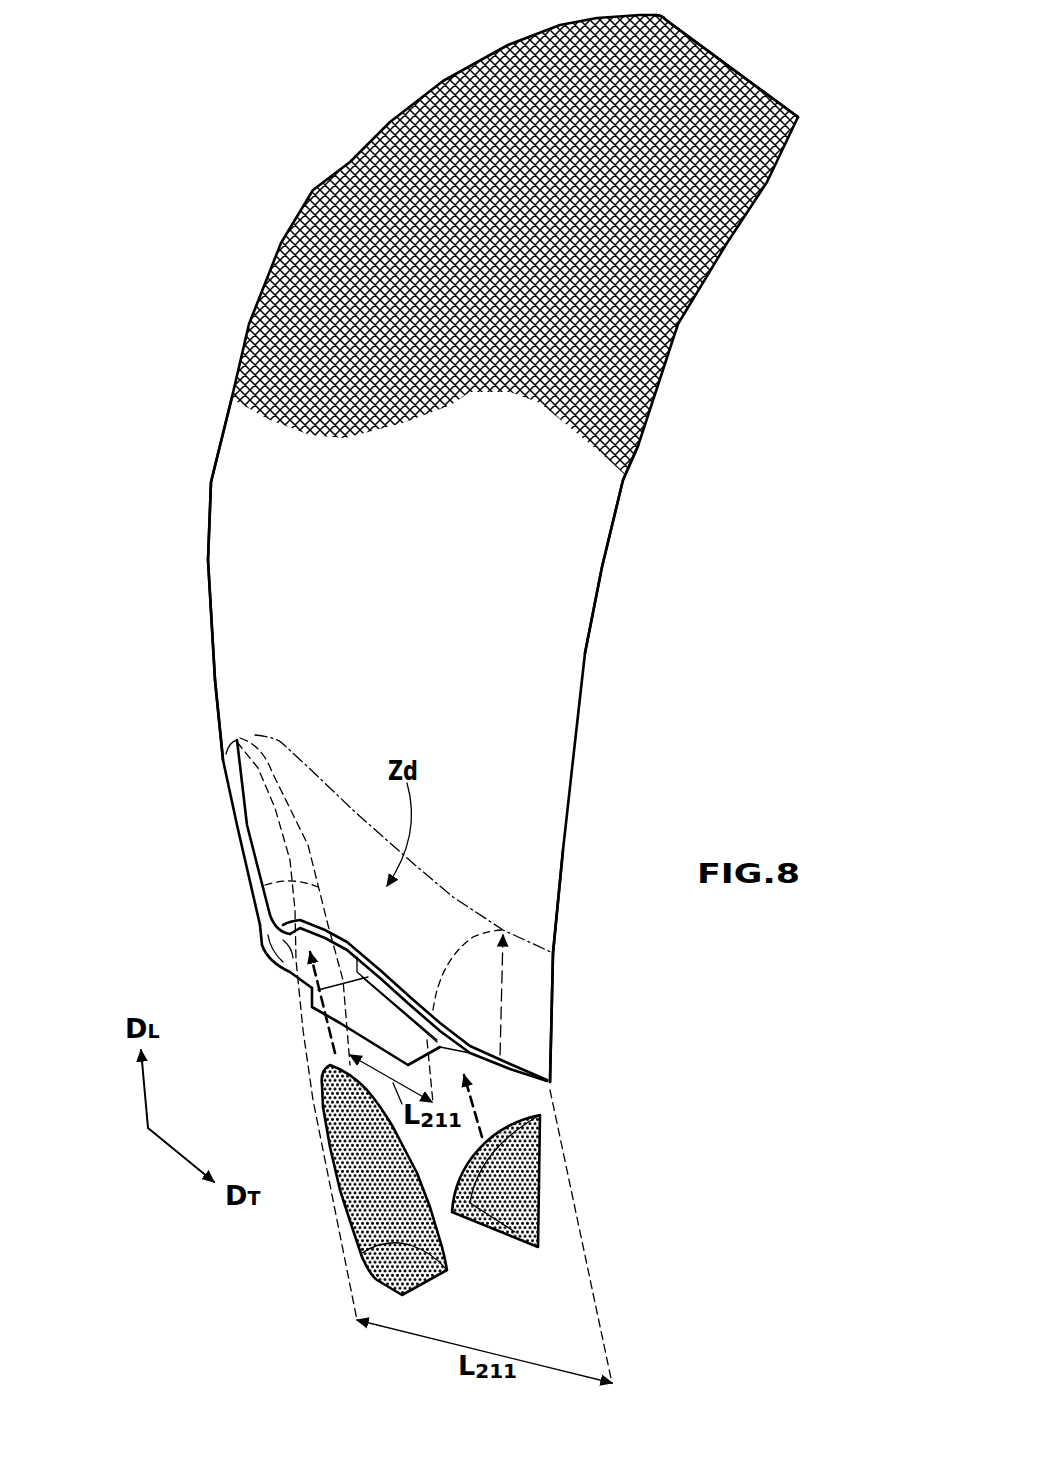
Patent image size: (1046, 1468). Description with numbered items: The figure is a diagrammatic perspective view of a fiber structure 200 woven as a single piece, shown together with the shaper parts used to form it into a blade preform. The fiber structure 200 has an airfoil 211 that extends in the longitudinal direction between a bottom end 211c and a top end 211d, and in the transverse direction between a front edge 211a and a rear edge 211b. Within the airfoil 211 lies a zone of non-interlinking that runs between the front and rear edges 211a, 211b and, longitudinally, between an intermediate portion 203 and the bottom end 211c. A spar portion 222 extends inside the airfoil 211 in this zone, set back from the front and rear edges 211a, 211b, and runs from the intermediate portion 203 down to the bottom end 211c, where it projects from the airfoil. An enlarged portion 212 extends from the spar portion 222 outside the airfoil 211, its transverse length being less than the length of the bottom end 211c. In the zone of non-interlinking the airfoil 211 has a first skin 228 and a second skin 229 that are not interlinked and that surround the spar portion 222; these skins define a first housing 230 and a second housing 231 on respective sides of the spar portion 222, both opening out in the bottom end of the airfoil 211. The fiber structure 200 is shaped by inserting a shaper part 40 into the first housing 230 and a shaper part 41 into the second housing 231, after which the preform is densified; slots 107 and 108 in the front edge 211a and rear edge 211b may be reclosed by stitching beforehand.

The fiber structure 200 is at (252, 155).
The airfoil 211 is at (524, 695).
The front edge 211a is at (208, 632).
The rear edge 211b is at (602, 567).
The bottom end 211c is at (488, 1062).
The top end 211d is at (742, 67).
The slot 108 is at (555, 1020).
The slot 107 is at (253, 858).
The first skin 228 is at (260, 834).
The spar portion 222 is at (262, 887).
The second skin 229 is at (260, 908).
The first housing 230 is at (284, 967).
The enlarged portion 212 is at (313, 990).
The second housing 231 is at (448, 1036).
The intermediate portion 203 is at (453, 897).
The shaper part 40 is at (412, 1273).
The shaper part 41 is at (528, 1222).